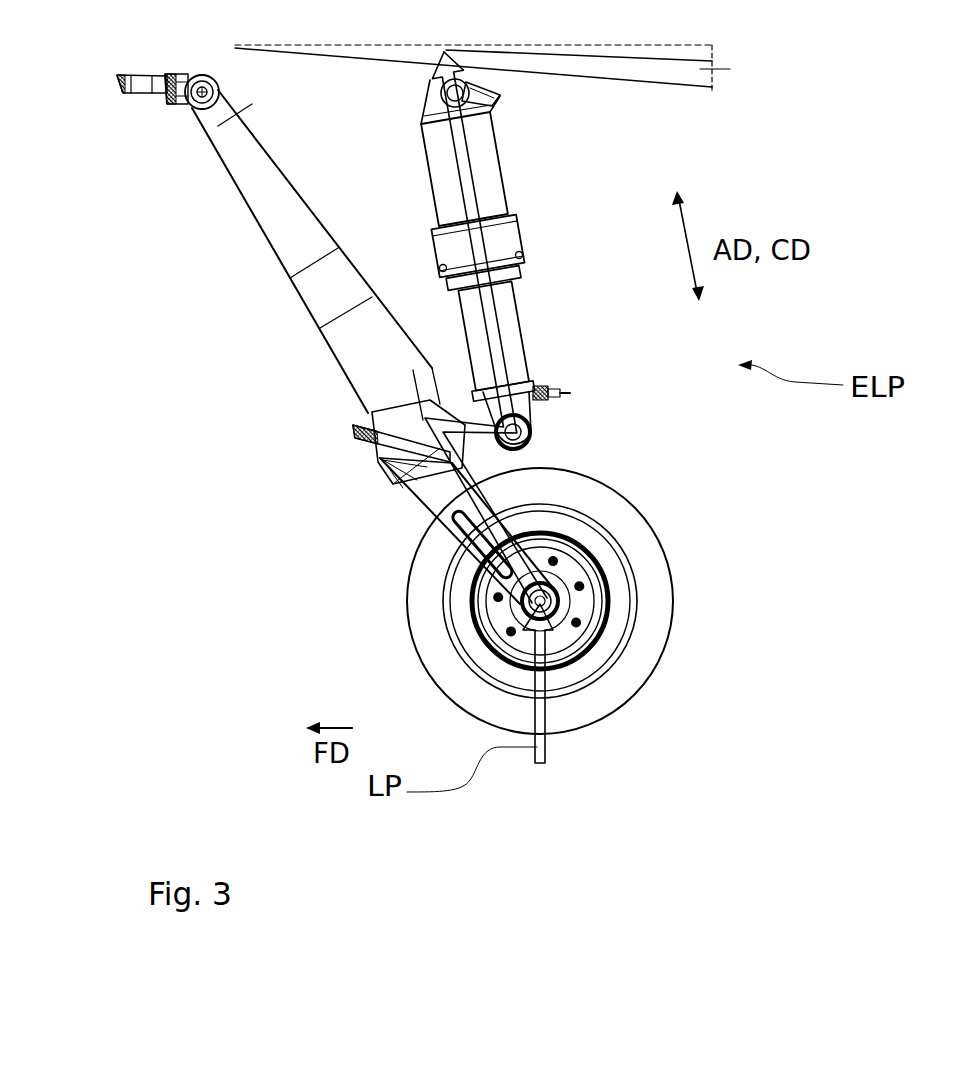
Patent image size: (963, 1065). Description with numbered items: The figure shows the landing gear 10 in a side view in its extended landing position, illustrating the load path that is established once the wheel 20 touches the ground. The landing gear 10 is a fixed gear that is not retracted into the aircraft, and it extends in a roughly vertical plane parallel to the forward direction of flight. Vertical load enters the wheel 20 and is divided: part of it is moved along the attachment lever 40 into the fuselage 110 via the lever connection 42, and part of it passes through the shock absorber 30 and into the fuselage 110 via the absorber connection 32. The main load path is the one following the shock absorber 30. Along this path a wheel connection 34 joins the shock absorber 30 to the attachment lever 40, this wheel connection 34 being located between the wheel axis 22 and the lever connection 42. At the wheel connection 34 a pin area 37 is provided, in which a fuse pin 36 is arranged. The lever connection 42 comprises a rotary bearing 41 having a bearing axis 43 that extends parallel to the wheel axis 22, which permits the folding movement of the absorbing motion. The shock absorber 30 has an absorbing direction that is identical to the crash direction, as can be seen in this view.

The landing gear 10 is at (163, 393).
The wheel 20 is at (582, 702).
The wheel axis 22 is at (580, 602).
The shock absorber 30 is at (513, 232).
The absorber connection 32 is at (477, 80).
The wheel connection 34 is at (530, 410).
The fuse pin 36 is at (530, 438).
The pin area 37 is at (573, 401).
The attachment lever 40 is at (291, 243).
The rotary bearing 41 is at (200, 108).
The lever connection 42 is at (207, 117).
The bearing axis 43 is at (223, 90).
The fuselage 110 is at (730, 69).